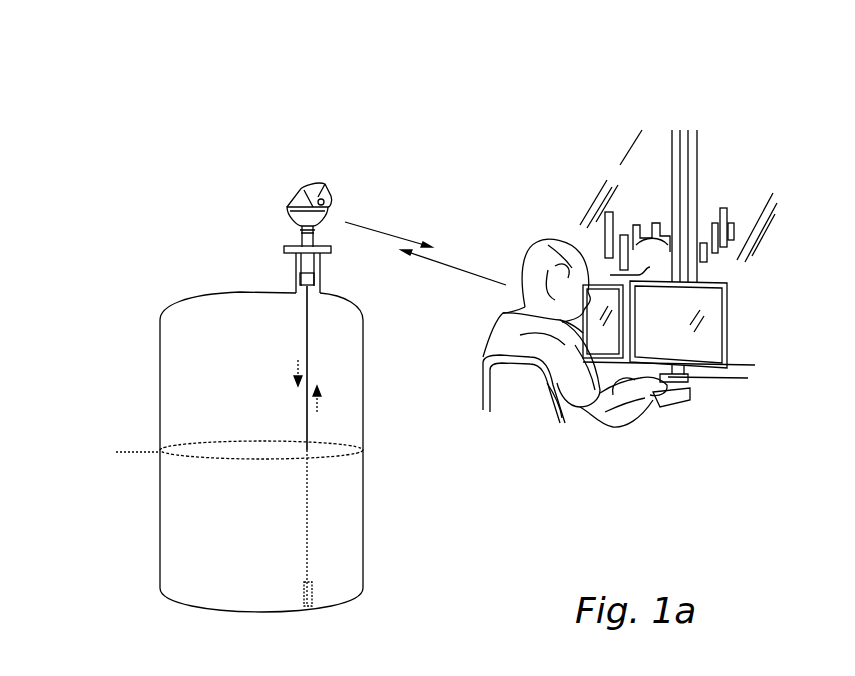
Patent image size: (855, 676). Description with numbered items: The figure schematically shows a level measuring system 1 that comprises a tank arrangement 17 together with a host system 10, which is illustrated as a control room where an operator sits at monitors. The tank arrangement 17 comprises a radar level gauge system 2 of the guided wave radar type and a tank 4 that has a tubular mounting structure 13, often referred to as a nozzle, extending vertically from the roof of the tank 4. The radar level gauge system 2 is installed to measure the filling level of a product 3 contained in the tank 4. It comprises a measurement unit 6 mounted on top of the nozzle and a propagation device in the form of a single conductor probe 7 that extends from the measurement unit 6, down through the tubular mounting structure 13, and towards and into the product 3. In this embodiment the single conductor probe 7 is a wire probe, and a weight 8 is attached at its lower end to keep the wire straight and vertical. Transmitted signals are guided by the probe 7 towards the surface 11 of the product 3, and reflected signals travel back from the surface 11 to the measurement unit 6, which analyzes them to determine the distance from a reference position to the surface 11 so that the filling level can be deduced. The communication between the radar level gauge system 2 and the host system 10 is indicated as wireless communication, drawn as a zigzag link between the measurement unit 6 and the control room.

The level measuring system 1 is at (500, 78).
The radar level gauge system 2 is at (270, 187).
The product 3 is at (240, 545).
The tank 4 is at (160, 400).
The measurement unit 6 is at (303, 189).
The single conductor probe 7 is at (312, 365).
The weight 8 is at (312, 595).
The host system 10 is at (720, 176).
The surface 11 is at (232, 452).
The tubular mounting structure 13 is at (322, 272).
The tank arrangement 17 is at (372, 125).